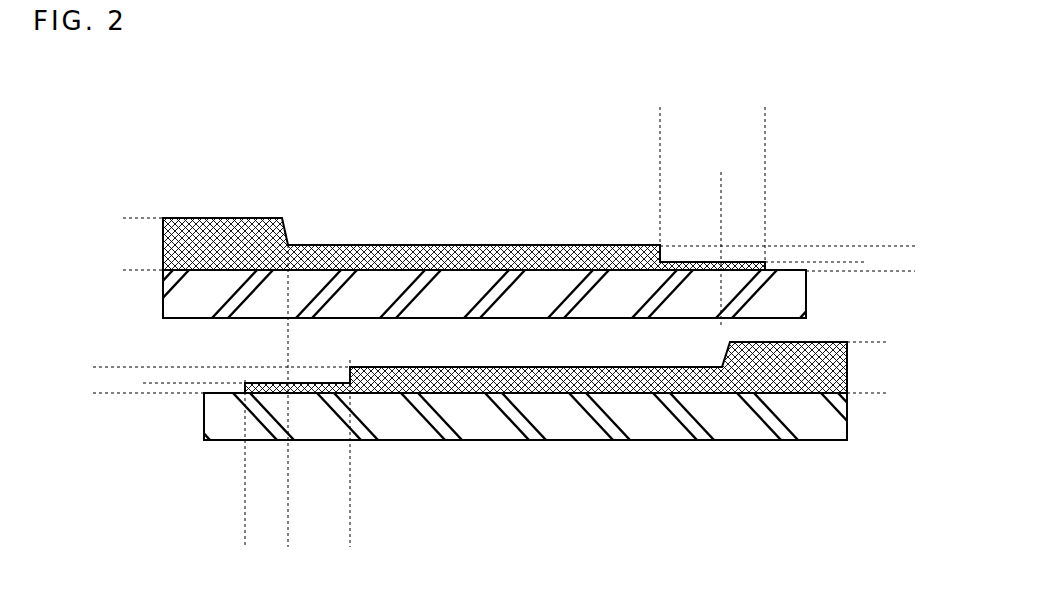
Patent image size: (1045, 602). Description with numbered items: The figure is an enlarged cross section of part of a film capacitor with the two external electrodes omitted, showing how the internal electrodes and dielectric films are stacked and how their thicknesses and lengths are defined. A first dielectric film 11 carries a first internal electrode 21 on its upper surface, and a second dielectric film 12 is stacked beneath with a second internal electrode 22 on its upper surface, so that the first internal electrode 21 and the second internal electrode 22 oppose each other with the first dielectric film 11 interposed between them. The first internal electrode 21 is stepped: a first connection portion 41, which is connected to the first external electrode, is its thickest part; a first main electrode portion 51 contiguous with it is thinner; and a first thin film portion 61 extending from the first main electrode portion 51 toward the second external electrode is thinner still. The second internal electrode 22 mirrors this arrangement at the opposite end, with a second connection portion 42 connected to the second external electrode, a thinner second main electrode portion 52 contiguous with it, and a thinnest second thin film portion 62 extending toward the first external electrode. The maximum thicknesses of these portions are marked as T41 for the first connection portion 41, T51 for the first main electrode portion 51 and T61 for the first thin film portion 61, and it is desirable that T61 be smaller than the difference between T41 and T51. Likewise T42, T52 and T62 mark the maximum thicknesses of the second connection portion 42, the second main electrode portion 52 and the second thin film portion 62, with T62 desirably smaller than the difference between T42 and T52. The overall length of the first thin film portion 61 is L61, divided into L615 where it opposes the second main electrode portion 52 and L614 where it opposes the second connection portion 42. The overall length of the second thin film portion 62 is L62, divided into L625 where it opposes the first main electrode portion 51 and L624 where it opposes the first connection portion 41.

The first dielectric film 11 is at (175, 293).
The second dielectric film 12 is at (833, 415).
The first internal electrode 21 is at (464, 181).
The second internal electrode 22 is at (546, 453).
The first connection portion 41 is at (229, 224).
The second connection portion 42 is at (784, 429).
The first main electrode portion 51 is at (430, 255).
The second main electrode portion 52 is at (583, 380).
The first thin film portion 61 is at (683, 205).
The second thin film portion 62 is at (305, 395).
The maximum thickness of the first connection portion T41 is at (133, 218).
The maximum thickness of the first main electrode portion T51 is at (907, 300).
The maximum thickness of the first thin film portion T61 is at (858, 298).
The maximum thickness of the second connection portion T42 is at (879, 342).
The maximum thickness of the second main electrode portion T52 is at (102, 340).
The maximum thickness of the second thin film portion T62 is at (152, 353).
The length of the first thin film portion L61 is at (765, 117).
The length of the first thin film portion opposing the second connection portion L614 is at (765, 182).
The length of the first thin film portion opposing the second main electrode portion L615 is at (721, 182).
The length of the second thin film portion L62 is at (350, 538).
The length of the second thin film portion opposing the first connection portion L624 is at (288, 473).
The length of the second thin film portion opposing the first main electrode portion L625 is at (350, 473).